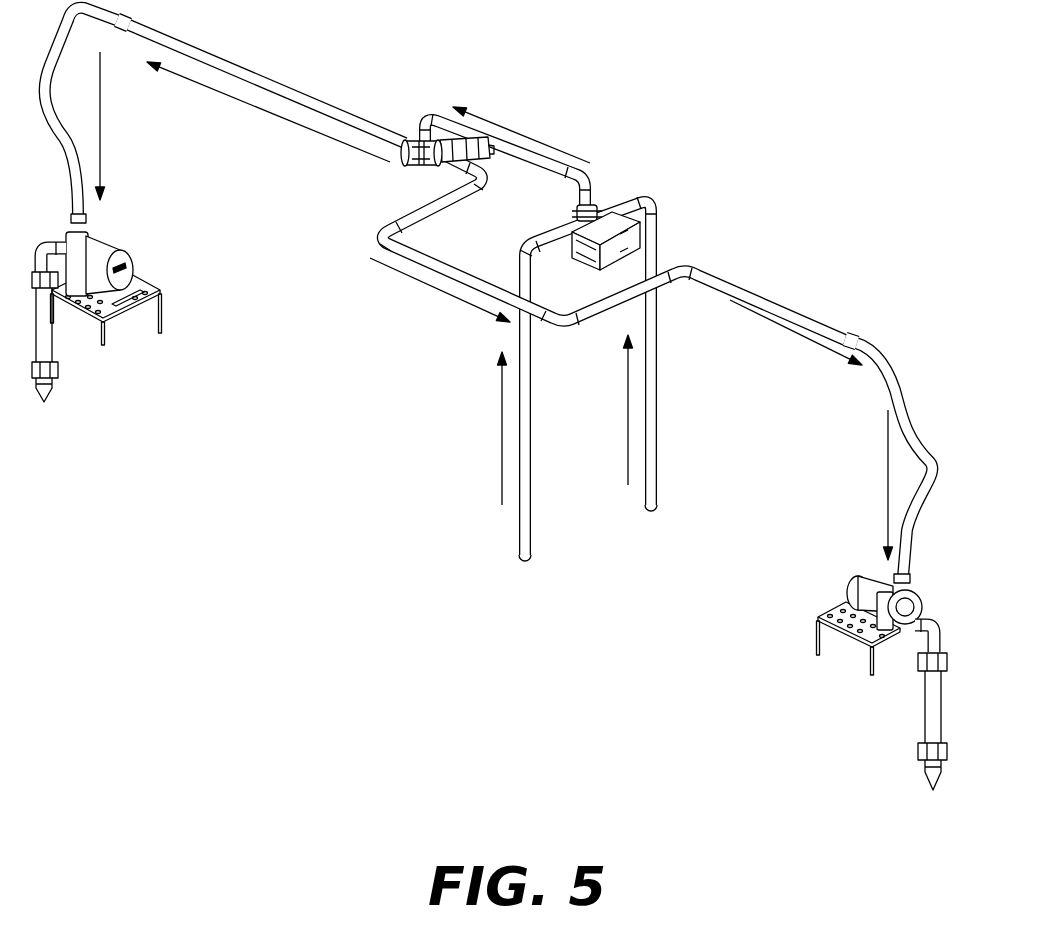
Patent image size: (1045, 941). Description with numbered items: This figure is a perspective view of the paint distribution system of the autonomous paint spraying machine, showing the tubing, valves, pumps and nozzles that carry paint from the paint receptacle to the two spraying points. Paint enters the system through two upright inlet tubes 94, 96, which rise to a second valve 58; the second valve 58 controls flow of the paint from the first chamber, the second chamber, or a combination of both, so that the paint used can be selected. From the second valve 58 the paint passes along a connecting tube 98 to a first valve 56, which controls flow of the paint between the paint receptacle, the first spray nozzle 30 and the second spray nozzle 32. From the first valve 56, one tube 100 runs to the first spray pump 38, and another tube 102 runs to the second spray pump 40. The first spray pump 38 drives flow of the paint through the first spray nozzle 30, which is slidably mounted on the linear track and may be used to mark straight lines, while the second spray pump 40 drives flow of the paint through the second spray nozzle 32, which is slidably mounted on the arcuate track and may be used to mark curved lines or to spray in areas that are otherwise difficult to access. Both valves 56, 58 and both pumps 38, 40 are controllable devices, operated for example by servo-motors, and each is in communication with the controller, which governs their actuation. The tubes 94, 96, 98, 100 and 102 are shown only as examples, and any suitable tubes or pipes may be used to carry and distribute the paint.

The first spray nozzle 30 is at (53, 353).
The second spray nozzle 32 is at (920, 705).
The first spray pump 38 is at (110, 240).
The second spray pump 40 is at (870, 573).
The first valve 56 is at (437, 167).
The second valve 58 is at (612, 220).
The tube 94 is at (657, 350).
The tube 96 is at (533, 413).
The tube 98 is at (437, 110).
The tube 100 is at (275, 87).
The tube 102 is at (837, 323).